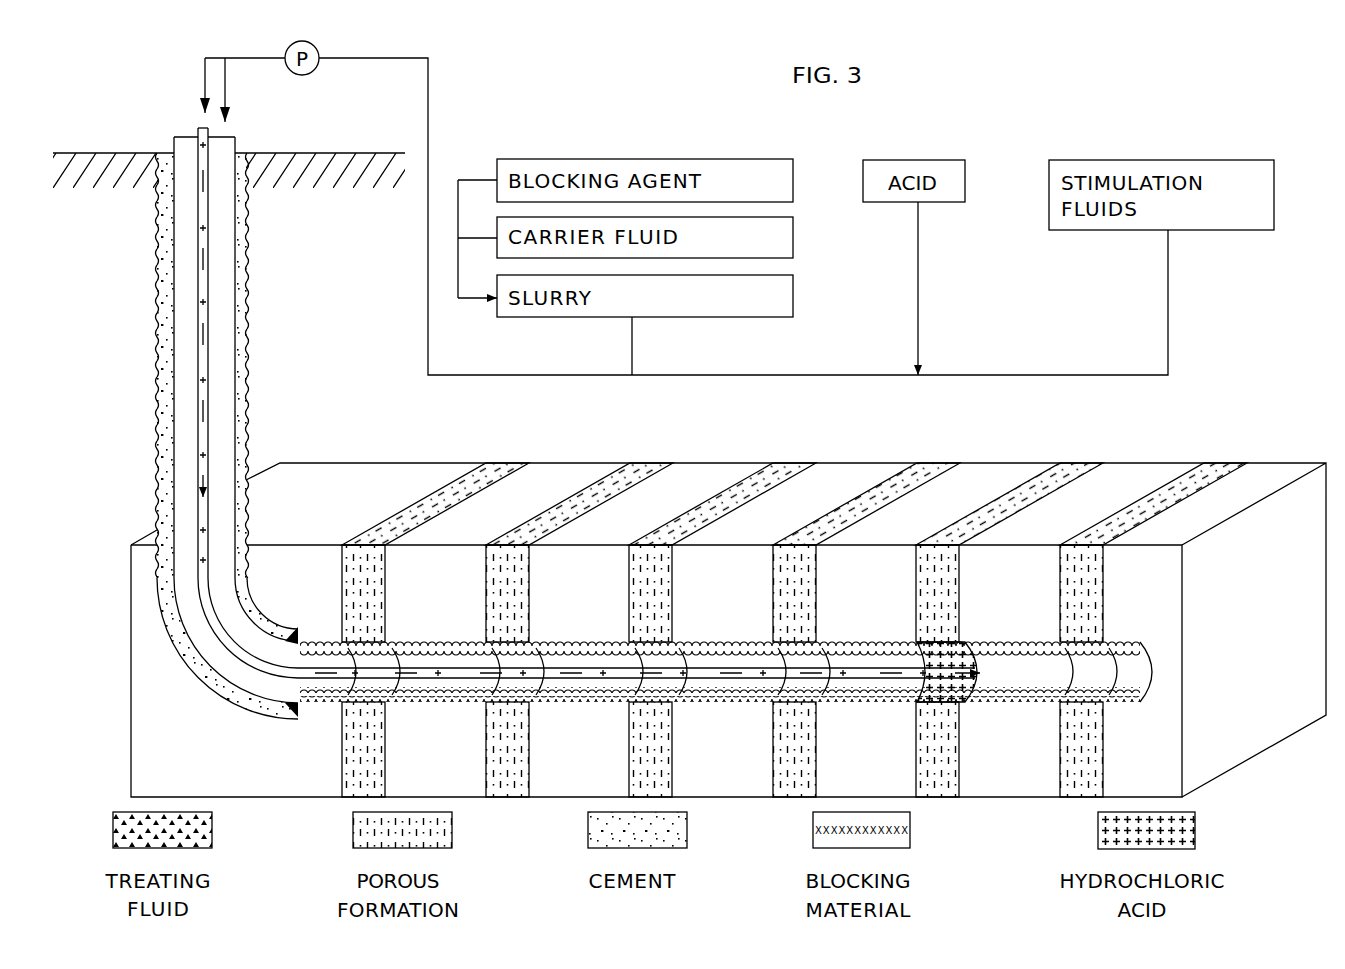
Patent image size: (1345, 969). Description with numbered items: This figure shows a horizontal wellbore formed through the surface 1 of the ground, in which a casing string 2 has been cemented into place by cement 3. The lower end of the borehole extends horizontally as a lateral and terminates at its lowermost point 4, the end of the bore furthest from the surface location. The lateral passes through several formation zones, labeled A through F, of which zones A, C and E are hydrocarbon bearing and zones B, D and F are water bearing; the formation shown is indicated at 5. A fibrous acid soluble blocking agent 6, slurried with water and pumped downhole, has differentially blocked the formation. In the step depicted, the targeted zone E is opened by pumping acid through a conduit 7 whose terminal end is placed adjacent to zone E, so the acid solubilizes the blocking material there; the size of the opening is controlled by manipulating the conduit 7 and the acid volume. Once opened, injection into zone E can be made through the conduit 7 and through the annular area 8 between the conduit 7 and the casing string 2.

The surface 1 is at (293, 155).
The casing string 2 is at (235, 318).
The cement 3 is at (244, 372).
The terminal end of borehole 4 is at (1157, 667).
The subterranean formation 5 is at (1265, 497).
The blocking agent 6 is at (990, 700).
The conduit 7 is at (210, 232).
The annular area 8 is at (220, 273).